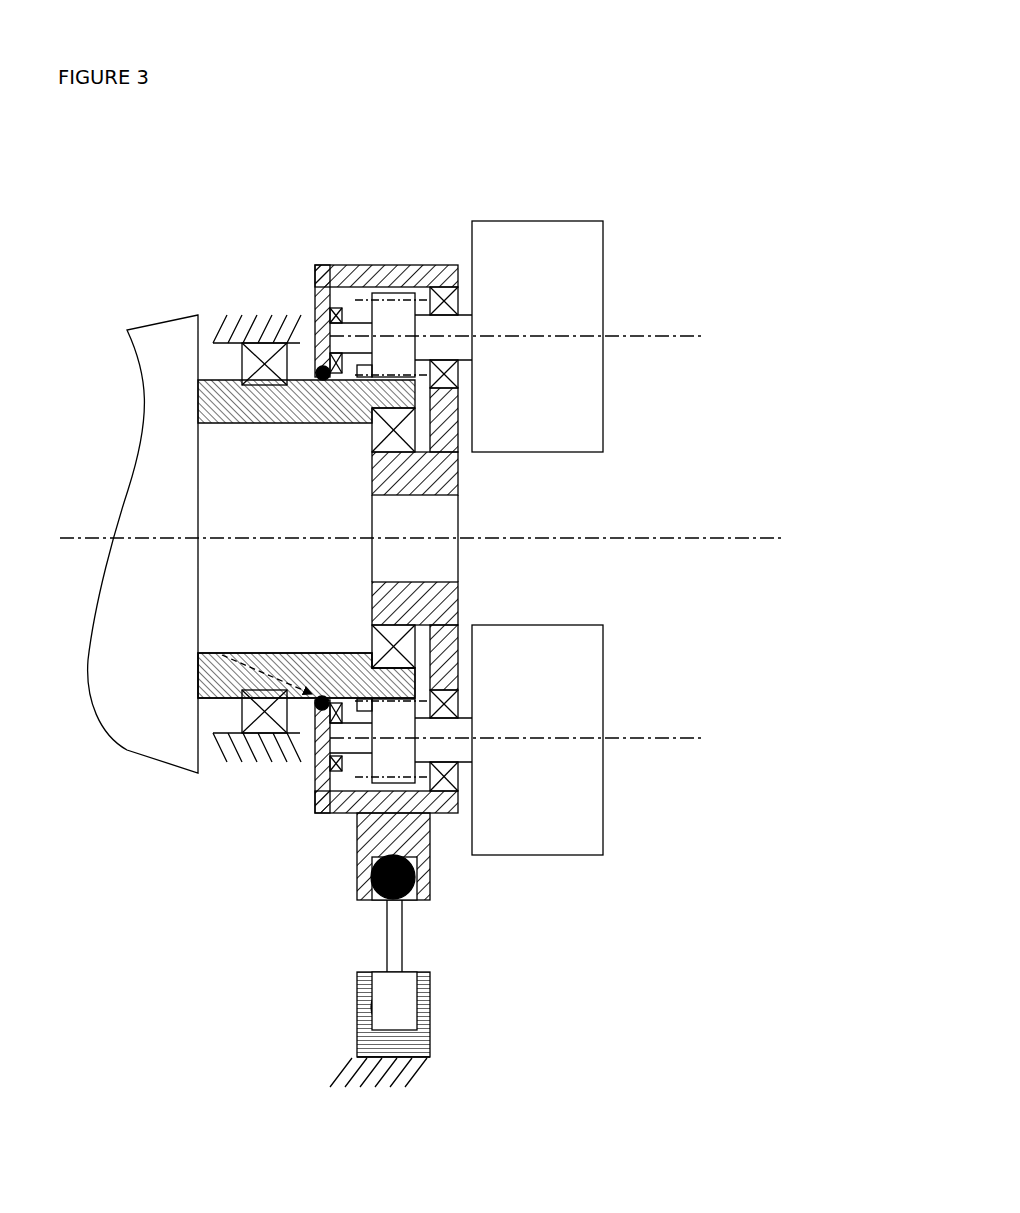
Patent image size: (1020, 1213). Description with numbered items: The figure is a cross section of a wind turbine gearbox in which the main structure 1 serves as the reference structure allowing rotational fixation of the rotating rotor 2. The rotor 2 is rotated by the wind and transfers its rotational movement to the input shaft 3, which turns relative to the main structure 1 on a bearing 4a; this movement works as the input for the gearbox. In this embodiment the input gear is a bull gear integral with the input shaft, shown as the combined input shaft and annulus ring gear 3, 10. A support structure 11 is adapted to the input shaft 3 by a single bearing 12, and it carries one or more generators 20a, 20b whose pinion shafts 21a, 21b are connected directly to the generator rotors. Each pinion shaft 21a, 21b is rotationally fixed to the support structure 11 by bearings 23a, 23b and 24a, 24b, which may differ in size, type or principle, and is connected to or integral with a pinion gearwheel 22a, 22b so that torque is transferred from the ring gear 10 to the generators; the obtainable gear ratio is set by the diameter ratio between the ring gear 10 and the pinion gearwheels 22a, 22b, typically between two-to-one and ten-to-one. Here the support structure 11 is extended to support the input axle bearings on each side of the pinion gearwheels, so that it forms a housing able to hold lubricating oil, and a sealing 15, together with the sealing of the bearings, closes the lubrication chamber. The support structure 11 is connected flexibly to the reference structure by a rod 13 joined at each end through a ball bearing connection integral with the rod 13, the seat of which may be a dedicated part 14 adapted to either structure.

The main structure 1 is at (248, 318).
The rotor 2 is at (148, 318).
The input shaft 3 is at (227, 682).
The annulus ring gear 10 is at (227, 682).
The bearing 4a is at (260, 712).
The sealing 15 is at (223, 655).
The support structure 11 is at (415, 611).
The single bearing 12 is at (400, 639).
The rod 13 is at (398, 942).
The dedicated part 14 is at (422, 1037).
The generator 20a is at (581, 238).
The generator 20b is at (581, 798).
The pinion shaft 21a is at (458, 327).
The pinion shaft 21b is at (443, 727).
The pinion gearwheel 22a is at (388, 358).
The pinion gearwheel 22b is at (387, 753).
The bearing 23a is at (443, 380).
The bearing 23b is at (443, 778).
The bearing 24a is at (323, 373).
The bearing 24b is at (322, 703).